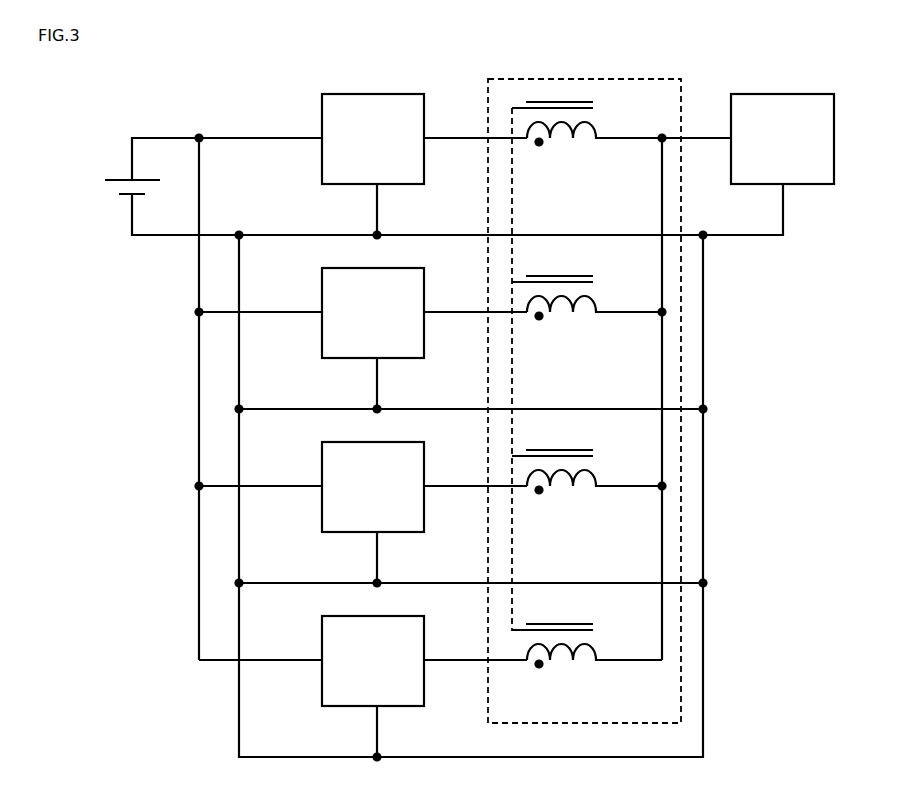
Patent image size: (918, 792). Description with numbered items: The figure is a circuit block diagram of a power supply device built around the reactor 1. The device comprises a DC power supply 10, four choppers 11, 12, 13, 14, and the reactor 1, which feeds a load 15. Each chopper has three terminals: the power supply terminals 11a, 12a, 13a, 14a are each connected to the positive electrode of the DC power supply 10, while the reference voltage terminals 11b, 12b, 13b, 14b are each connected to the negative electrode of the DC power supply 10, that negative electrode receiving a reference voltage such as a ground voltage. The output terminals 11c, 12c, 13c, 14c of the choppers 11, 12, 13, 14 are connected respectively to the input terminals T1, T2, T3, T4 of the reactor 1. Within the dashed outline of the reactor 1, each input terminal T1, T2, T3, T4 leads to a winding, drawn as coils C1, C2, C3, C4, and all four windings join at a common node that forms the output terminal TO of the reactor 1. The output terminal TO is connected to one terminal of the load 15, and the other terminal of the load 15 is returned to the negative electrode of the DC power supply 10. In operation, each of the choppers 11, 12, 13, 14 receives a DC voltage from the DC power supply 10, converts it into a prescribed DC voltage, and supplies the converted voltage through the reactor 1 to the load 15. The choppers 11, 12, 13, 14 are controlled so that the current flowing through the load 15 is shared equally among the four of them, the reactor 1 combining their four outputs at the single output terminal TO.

The reactor 1 is at (583, 74).
The DC power supply 10 is at (120, 178).
The chopper 11 is at (340, 93).
The power supply terminal 11a is at (322, 142).
The reference voltage terminal 11b is at (377, 188).
The output terminal 11c is at (426, 141).
The chopper 12 is at (340, 267).
The power supply terminal 12a is at (322, 316).
The reference voltage terminal 12b is at (377, 362).
The output terminal 12c is at (426, 315).
The chopper 13 is at (340, 441).
The power supply terminal 13a is at (322, 490).
The reference voltage terminal 13b is at (377, 536).
The output terminal 13c is at (426, 489).
The chopper 14 is at (340, 615).
The power supply terminal 14a is at (322, 664).
The reference voltage terminal 14b is at (377, 710).
The output terminal 14c is at (426, 663).
The load 15 is at (783, 94).
The input terminal T1 is at (487, 136).
The input terminal T2 is at (487, 310).
The input terminal T3 is at (487, 484).
The input terminal T4 is at (487, 658).
The output terminal TO is at (682, 136).
The first coil C1 is at (561, 143).
The second coil C2 is at (561, 317).
The third coil C3 is at (561, 491).
The fourth coil C4 is at (561, 665).